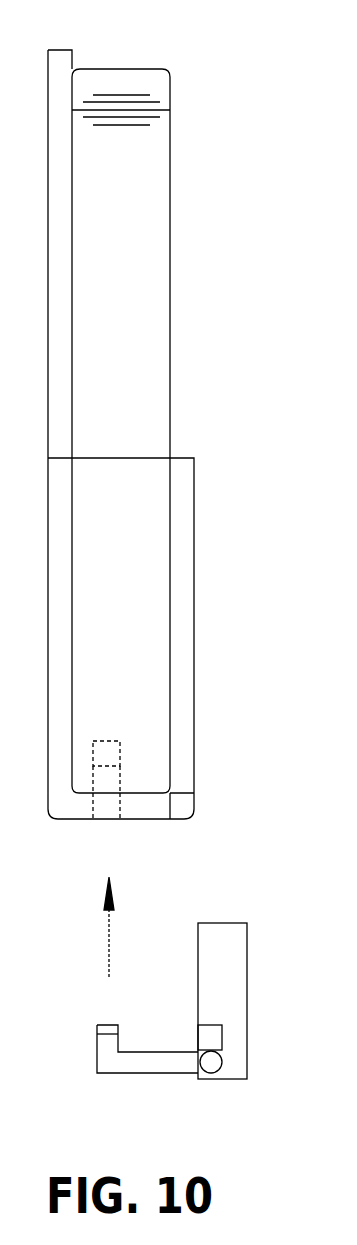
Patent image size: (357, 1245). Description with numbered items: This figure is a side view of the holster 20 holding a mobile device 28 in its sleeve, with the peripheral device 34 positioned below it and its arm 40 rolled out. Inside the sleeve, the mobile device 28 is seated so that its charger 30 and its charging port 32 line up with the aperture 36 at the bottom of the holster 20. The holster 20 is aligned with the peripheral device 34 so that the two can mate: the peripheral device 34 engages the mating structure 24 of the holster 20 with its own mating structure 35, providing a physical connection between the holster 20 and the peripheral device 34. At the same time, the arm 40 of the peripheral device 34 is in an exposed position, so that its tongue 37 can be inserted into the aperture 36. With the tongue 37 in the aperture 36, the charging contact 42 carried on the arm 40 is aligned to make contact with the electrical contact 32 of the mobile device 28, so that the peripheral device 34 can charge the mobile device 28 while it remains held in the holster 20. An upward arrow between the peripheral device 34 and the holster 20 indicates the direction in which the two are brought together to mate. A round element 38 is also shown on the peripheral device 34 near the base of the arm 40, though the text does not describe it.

The holster 20 is at (184, 478).
The mobile device 28 is at (150, 227).
The charger 30 is at (110, 755).
The charging port 32 is at (107, 780).
The aperture 36 is at (108, 810).
The mating structure 24 is at (185, 807).
The peripheral device 34 is at (233, 948).
The mating structure 35 is at (213, 1039).
The roller / pivot 38 is at (212, 1066).
The arm 40 is at (142, 1066).
The charging contact 42 is at (110, 1030).
The tongue 37 is at (103, 1047).